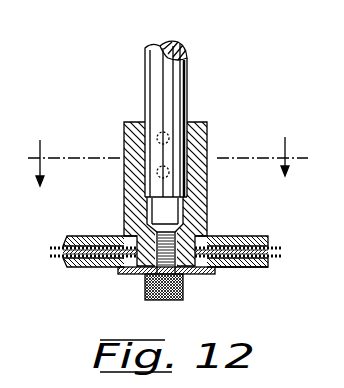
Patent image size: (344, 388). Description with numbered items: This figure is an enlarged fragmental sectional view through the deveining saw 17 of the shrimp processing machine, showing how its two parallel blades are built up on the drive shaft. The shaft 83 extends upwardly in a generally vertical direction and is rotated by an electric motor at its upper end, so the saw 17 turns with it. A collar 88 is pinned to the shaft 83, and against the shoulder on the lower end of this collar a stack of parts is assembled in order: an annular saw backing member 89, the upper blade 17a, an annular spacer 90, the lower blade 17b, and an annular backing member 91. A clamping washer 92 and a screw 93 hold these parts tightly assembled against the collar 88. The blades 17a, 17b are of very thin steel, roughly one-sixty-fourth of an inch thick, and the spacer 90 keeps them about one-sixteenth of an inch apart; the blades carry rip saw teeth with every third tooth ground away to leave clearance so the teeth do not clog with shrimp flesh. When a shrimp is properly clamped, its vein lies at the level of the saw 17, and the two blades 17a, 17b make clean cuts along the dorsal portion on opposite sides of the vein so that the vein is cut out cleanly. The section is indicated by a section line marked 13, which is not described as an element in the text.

The section line 13- 13 is at (167, 173).
The shaft 83 is at (187, 90).
The collar 88 is at (207, 140).
The annular saw backing member 89 is at (229, 237).
The saw 17 is at (185, 266).
The blade 17a is at (272, 244).
The blade 17b is at (273, 255).
The annular spacer 90 is at (258, 251).
The annular backing member 91 is at (243, 269).
The clamping washer 92 is at (126, 274).
The screw 93 is at (147, 290).